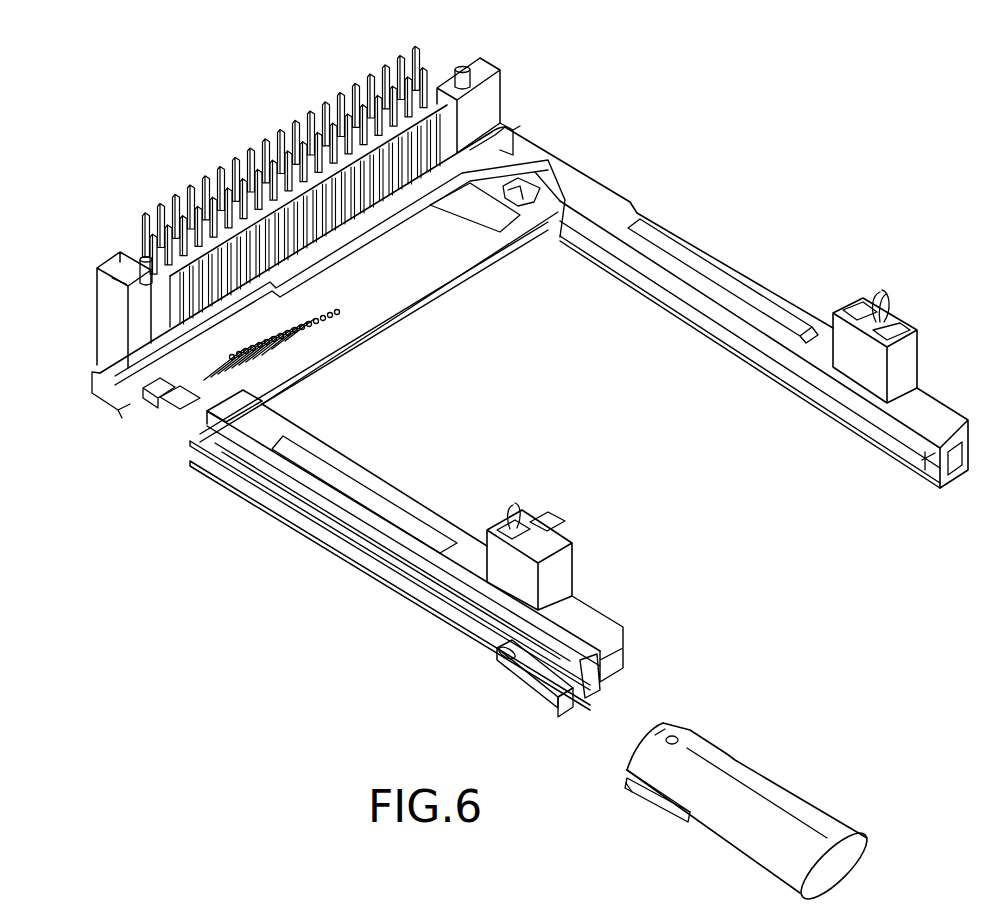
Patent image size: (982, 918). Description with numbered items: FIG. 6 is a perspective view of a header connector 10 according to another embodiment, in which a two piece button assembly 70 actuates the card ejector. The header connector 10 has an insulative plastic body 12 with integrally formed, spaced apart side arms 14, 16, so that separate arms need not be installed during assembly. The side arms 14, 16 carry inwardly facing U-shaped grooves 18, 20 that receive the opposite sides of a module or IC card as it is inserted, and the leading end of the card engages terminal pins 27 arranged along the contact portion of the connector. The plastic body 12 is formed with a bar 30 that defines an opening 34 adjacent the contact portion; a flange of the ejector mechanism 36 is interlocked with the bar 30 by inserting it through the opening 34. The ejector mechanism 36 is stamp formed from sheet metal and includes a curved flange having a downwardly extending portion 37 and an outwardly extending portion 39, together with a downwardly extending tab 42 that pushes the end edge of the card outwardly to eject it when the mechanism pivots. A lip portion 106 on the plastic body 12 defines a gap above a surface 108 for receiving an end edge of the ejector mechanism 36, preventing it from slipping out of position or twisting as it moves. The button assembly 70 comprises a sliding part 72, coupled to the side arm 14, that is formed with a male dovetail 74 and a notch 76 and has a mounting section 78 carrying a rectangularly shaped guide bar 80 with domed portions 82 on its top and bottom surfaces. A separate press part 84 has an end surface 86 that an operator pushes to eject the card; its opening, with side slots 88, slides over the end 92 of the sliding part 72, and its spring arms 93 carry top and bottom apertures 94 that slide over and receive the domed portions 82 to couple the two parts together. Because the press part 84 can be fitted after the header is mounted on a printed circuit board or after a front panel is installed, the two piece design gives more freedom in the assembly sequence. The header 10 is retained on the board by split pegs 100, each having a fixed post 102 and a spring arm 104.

The header connector 10 is at (792, 219).
The insulative plastic body 12 is at (588, 165).
The side arm 14 is at (402, 489).
The side arm 16 is at (785, 300).
The U-shaped groove 18 is at (625, 652).
The U-shaped groove 20 is at (871, 407).
The terminal pins 27 is at (292, 360).
The bar 30 is at (532, 137).
The opening 34 is at (511, 150).
The ejector mechanism 36 is at (438, 240).
The downwardly extending portion 37 is at (153, 394).
The outwardly extending portion 39 is at (110, 420).
The downwardly extending tab 42 is at (521, 197).
The button assembly 70 is at (373, 588).
The sliding part 72 is at (258, 484).
The male dovetail 74 is at (614, 690).
The notch 76 is at (162, 398).
The mounting section 78 is at (477, 623).
The guide bar 80 is at (544, 674).
The domed portions 82 is at (519, 662).
The press part 84 is at (794, 784).
The end surface 86 is at (853, 858).
The side slots 88 is at (648, 797).
The end of sliding part 92 is at (562, 705).
The spring arms 93 is at (660, 732).
The apertures 94 is at (682, 740).
The split pegs 100 is at (477, 83).
The fixed posts 102 is at (99, 333).
The spring arms 104 is at (142, 266).
The lip portion 106 is at (431, 176).
The surface 108 is at (432, 206).